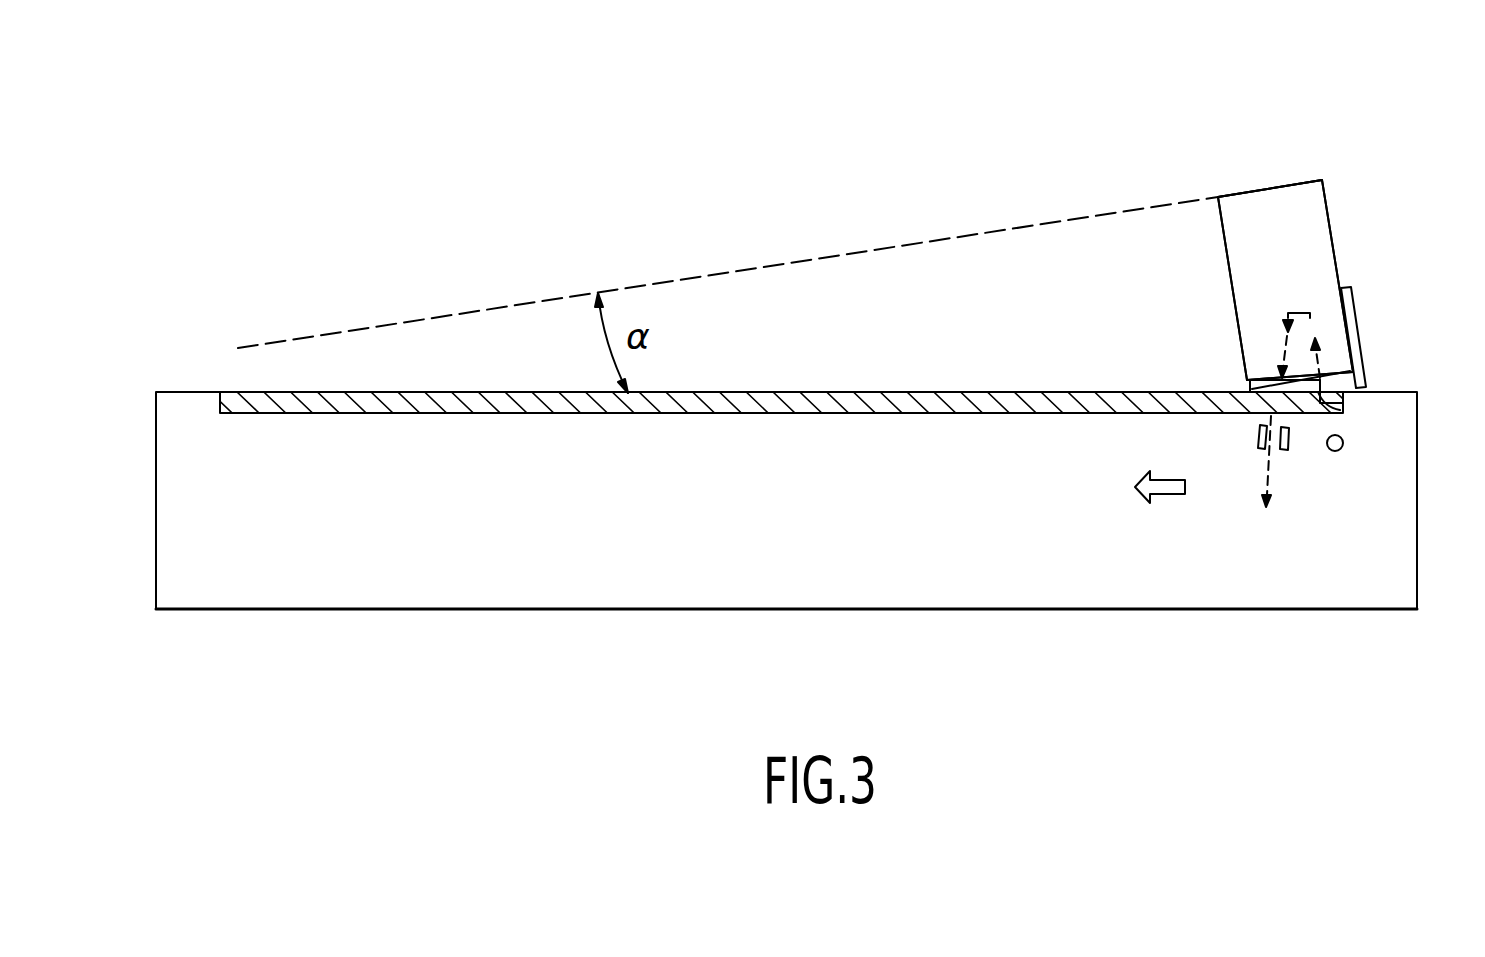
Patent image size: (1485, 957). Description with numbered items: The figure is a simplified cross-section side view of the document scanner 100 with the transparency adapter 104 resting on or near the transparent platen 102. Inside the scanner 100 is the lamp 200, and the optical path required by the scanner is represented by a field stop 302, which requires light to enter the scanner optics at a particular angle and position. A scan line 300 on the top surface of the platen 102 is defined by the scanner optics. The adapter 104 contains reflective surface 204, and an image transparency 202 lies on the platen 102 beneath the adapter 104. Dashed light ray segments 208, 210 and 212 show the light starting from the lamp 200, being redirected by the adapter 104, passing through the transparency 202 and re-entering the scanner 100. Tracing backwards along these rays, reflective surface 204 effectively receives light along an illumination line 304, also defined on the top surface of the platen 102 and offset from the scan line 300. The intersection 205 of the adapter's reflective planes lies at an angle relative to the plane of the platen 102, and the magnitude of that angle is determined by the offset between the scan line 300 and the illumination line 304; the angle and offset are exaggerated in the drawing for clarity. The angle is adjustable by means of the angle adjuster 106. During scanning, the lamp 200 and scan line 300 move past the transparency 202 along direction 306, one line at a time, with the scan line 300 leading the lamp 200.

The scanner 100 is at (1085, 588).
The platen 102 is at (933, 392).
The adapter 104 is at (1279, 159).
The angle adjuster 106 is at (1358, 320).
The lamp 200 is at (1343, 444).
The image transparency 202 is at (1250, 385).
The reflective surface 204 is at (1333, 227).
The intersection of the reflective planes 205 is at (1238, 192).
The light ray segment 208 is at (1333, 420).
The light ray segment 210 is at (1298, 312).
The light ray segment 212 is at (1272, 466).
The scan line 300 is at (1296, 376).
The field stop 302 is at (1258, 452).
The illumination line 304 is at (1355, 393).
The direction 306 is at (1163, 496).